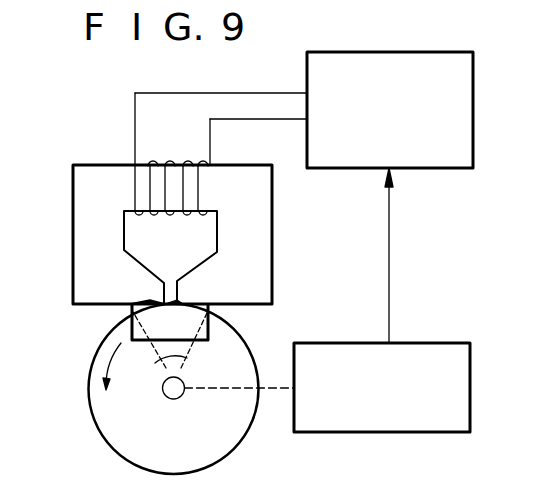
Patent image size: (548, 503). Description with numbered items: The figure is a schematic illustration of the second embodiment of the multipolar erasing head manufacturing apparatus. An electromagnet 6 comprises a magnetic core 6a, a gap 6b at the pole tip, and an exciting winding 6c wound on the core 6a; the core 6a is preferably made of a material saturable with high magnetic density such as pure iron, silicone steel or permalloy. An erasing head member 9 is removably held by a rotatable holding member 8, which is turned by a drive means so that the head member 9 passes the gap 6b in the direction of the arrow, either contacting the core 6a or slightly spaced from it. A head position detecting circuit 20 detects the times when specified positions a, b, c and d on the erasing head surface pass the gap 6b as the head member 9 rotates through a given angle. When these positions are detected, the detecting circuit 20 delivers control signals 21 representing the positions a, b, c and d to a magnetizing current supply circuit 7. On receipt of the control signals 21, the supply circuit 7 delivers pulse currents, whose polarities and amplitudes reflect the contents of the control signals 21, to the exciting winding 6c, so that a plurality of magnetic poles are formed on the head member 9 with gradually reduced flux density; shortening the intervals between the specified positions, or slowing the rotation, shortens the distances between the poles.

The electromagnet 6 is at (73, 231).
The magnetic core 6a is at (255, 226).
The gap 6b is at (178, 283).
The exciting winding 6c is at (200, 182).
The magnetizing current supply circuit 7 is at (474, 110).
The holding member 8 is at (105, 422).
The erasing head member 9 is at (130, 334).
The head position detecting circuit 20 is at (471, 402).
The control signals 21 is at (390, 258).
The specified position a is at (134, 309).
The specified position b is at (130, 303).
The specified position c is at (135, 303).
The specified position d is at (146, 294).